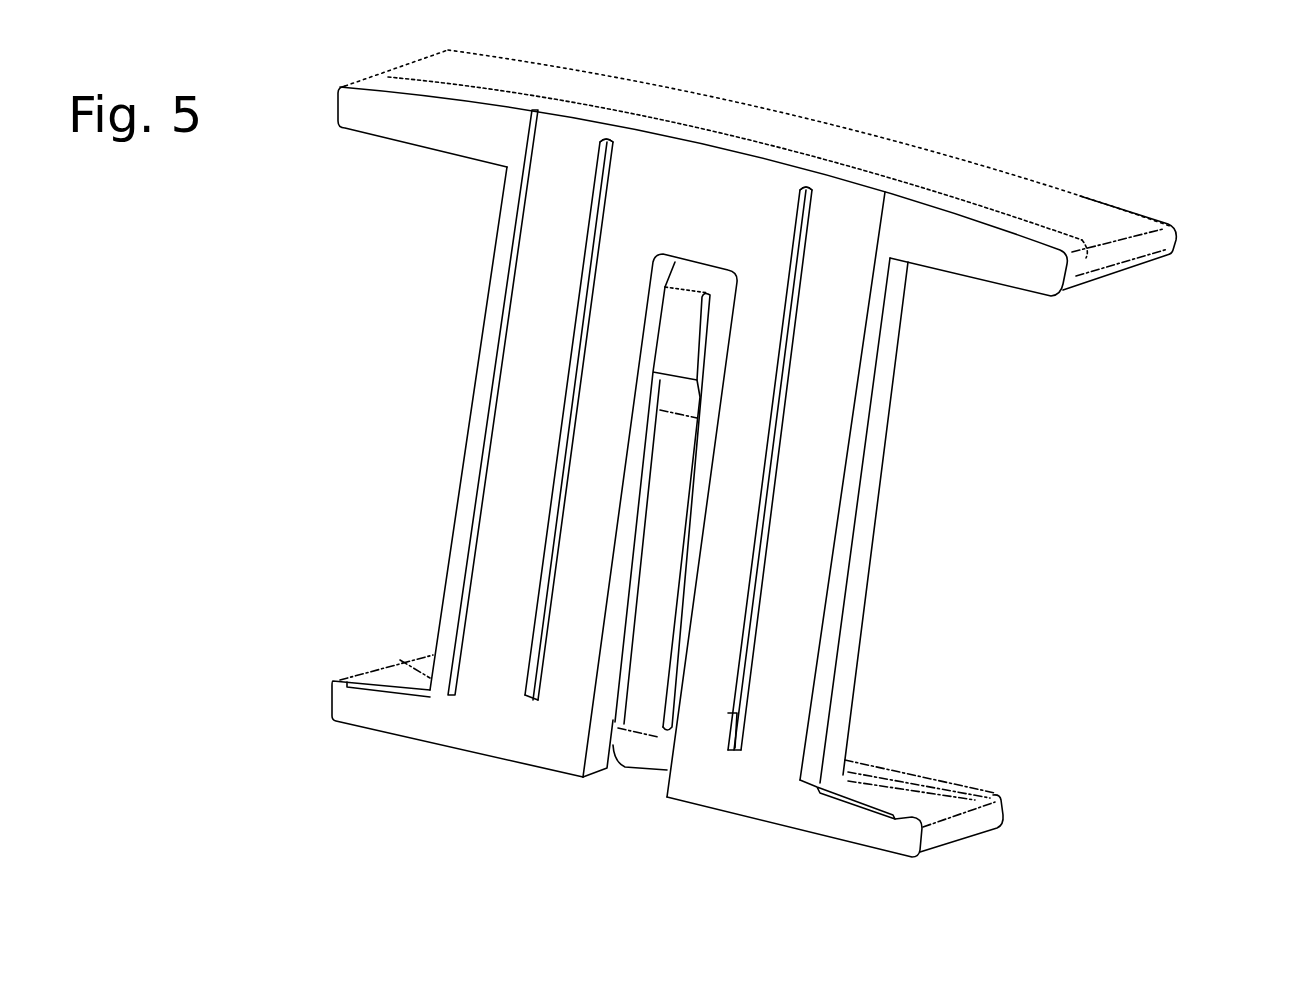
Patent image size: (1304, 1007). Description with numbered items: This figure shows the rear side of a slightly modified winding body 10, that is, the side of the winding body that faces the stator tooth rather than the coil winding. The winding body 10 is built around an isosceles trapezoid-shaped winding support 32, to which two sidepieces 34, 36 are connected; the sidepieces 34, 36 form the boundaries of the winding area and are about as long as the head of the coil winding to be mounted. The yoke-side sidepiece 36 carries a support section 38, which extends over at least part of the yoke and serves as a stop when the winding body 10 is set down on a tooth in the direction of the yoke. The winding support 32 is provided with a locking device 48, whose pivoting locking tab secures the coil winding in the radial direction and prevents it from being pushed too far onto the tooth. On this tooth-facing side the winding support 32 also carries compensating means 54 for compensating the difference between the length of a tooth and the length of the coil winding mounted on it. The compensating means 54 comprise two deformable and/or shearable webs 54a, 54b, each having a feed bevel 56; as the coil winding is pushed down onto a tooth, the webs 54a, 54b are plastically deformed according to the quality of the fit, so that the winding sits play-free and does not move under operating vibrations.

The winding body 10 is at (816, 465).
The winding support 32 is at (805, 550).
The sidepiece 34 is at (1065, 206).
The yoke-side sidepiece 36 is at (915, 787).
The support section 38 is at (382, 695).
The locking device 48 is at (705, 255).
The compensating means 54 is at (613, 137).
The web 54a is at (785, 420).
The web 54b is at (568, 380).
The feed bevel 56 is at (537, 698).